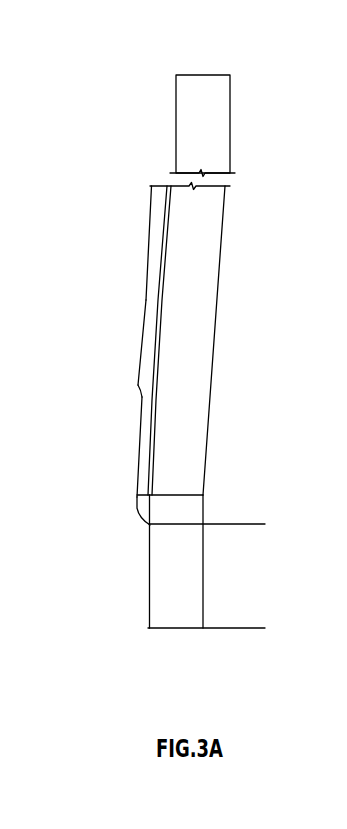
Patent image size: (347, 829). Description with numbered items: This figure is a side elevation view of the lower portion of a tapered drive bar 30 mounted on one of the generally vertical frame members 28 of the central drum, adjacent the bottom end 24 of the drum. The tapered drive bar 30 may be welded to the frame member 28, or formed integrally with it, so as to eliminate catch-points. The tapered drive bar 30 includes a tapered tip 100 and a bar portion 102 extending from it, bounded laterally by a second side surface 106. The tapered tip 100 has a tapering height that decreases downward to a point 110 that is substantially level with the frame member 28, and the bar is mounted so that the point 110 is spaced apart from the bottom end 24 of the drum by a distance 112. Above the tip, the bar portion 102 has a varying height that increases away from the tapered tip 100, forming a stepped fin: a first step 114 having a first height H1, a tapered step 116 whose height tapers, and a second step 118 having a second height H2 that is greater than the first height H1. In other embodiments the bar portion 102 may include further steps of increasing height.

The frame member 28 is at (235, 126).
The bar portion 102 is at (141, 304).
The tapered drive bar 30 is at (118, 243).
The second side surface 106 is at (213, 340).
The second step 118 is at (89, 331).
The tapered step 116 is at (87, 368).
The second height H2 is at (155, 423).
The first step 114 is at (86, 447).
The first height H1 is at (160, 505).
The tapered tip 100 is at (105, 537).
The point 110 is at (213, 504).
The bottom end 24 is at (206, 585).
The distance 112 is at (260, 524).